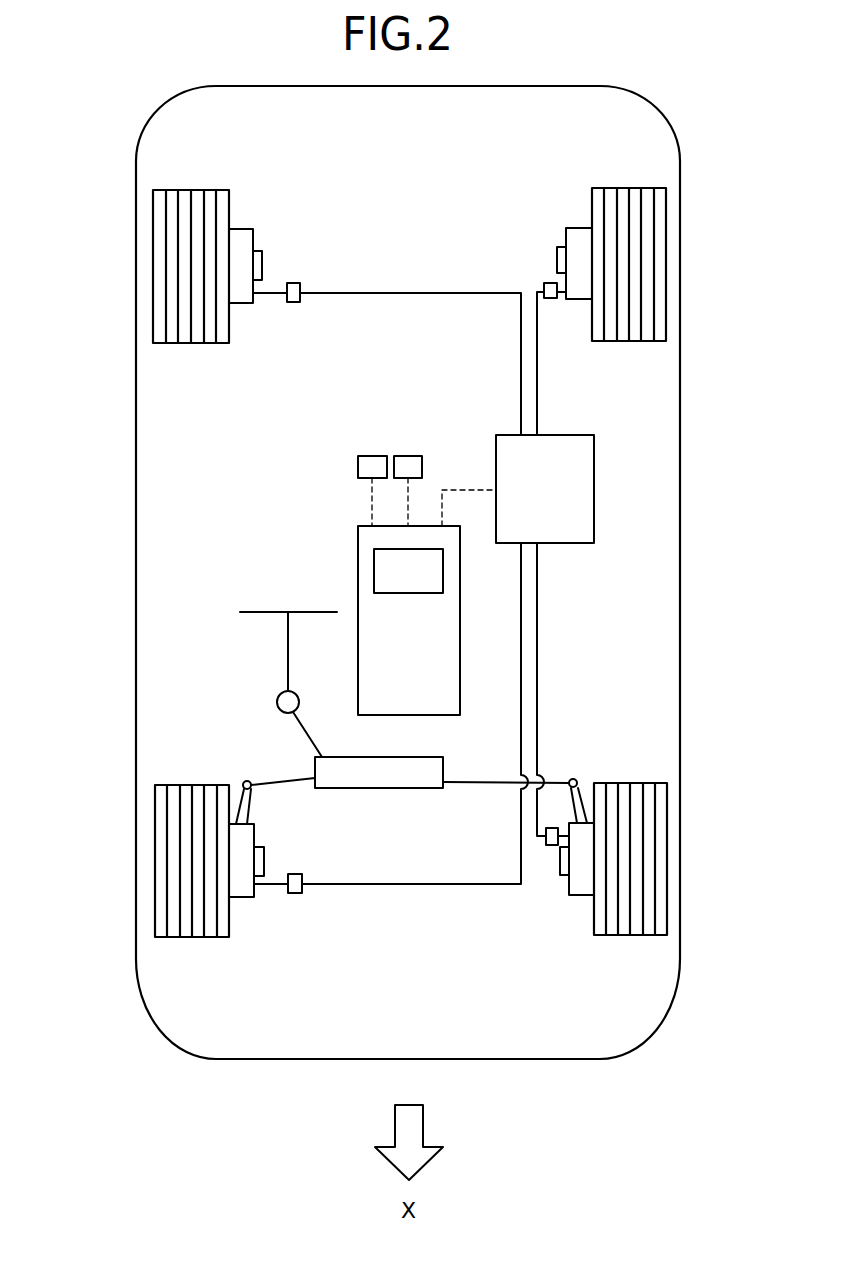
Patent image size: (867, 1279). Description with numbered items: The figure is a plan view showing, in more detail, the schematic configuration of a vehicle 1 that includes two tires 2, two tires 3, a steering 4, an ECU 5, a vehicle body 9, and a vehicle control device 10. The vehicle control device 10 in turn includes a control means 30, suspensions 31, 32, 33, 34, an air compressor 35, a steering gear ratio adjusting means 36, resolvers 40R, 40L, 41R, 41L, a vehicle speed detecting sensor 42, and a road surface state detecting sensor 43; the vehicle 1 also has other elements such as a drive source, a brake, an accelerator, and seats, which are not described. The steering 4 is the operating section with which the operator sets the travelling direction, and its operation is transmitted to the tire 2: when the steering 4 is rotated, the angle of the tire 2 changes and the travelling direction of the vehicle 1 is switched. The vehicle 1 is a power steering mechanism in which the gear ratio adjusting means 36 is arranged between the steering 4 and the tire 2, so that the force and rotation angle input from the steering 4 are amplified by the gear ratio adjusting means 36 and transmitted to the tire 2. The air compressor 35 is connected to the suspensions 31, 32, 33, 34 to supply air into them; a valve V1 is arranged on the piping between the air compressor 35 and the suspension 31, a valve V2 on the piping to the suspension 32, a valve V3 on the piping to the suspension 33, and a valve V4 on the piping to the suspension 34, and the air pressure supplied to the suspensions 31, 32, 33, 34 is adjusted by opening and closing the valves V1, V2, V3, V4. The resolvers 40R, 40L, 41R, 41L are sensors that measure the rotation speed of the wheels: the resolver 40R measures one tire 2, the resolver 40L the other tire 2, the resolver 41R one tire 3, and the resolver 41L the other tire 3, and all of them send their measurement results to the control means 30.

The vehicle 1 is at (140, 471).
The vehicle body 9 is at (136, 589).
The tire 2 is at (163, 920).
The tire 3 is at (157, 219).
The vehicle control device 10 is at (290, 445).
The ECU 5 is at (358, 553).
The control means 30 is at (443, 572).
The vehicle speed detecting sensor 42 is at (373, 456).
The road surface state detecting sensor 43 is at (408, 456).
The air compressor 35 is at (580, 478).
The steering 4 is at (248, 614).
The steering gear ratio adjusting means 36 is at (393, 789).
The suspension 31 is at (242, 898).
The suspension 32 is at (583, 893).
The suspension 33 is at (238, 235).
The suspension 34 is at (580, 237).
The resolver 40R is at (264, 858).
The resolver 40L is at (560, 872).
The resolver 41R is at (258, 257).
The resolver 41L is at (557, 254).
The valve V1 is at (295, 893).
The valve V2 is at (545, 838).
The valve V3 is at (294, 302).
The valve V4 is at (549, 298).